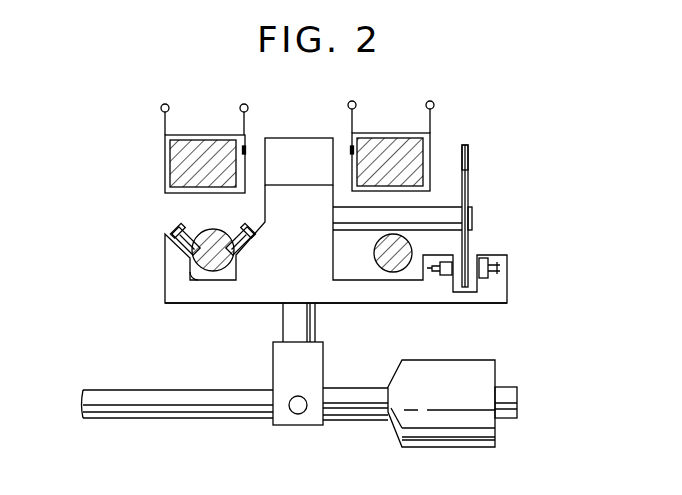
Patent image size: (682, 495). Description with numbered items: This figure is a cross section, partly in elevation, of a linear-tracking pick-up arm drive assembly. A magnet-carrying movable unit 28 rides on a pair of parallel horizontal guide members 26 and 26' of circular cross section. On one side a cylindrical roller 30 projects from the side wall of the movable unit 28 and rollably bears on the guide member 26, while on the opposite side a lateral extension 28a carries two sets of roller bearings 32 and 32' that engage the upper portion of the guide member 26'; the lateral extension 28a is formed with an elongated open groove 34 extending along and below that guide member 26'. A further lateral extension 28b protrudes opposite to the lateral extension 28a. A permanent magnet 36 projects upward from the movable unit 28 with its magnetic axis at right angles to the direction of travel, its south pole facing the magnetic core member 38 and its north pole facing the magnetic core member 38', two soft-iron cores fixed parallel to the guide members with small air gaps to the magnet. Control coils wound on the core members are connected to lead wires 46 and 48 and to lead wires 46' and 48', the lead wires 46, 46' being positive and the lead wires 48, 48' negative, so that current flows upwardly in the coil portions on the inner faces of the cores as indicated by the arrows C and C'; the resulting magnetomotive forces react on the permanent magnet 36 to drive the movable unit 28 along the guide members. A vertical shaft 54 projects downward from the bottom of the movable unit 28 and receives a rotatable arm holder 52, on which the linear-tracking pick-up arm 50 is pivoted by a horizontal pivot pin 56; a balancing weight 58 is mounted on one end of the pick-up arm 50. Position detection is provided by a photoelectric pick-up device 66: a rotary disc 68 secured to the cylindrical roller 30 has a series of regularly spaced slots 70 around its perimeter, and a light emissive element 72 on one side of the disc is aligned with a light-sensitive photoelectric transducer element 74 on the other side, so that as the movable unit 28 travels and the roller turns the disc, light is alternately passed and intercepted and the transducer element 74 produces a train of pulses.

The guide member 26 is at (374, 253).
The guide member 26' is at (173, 261).
The magnet-carrying movable unit 28 is at (303, 251).
The lateral extension 28a is at (222, 303).
The lateral extension 28b is at (408, 303).
The cylindrical roller 30 is at (446, 206).
The roller bearing 32 is at (239, 225).
The roller bearing 32' is at (170, 225).
The elongated groove 34 is at (193, 283).
The permanent magnet 36 is at (297, 137).
The magnetic core member 38 is at (391, 124).
The magnetic core member 38' is at (205, 148).
The lead wire 46 is at (370, 109).
The lead wire 46' is at (260, 110).
The lead wire 48 is at (446, 109).
The lead wire 48' is at (142, 120).
The current direction arrow C is at (338, 132).
The current direction arrow C' is at (258, 133).
The linear-tracking pick-up arm 50 is at (170, 420).
The arm holder 52 is at (323, 368).
The vertical shaft 54 is at (303, 321).
The horizontal pivot pin 56 is at (298, 415).
The balancing weight 58 is at (495, 381).
The photoelectric pick-up device 66 is at (473, 246).
The rotary disc 68 is at (470, 191).
The slots or apertures 70 is at (468, 170).
The light emissive element 72 is at (446, 278).
The light-sensitive photoelectric transducer element 74 is at (486, 280).